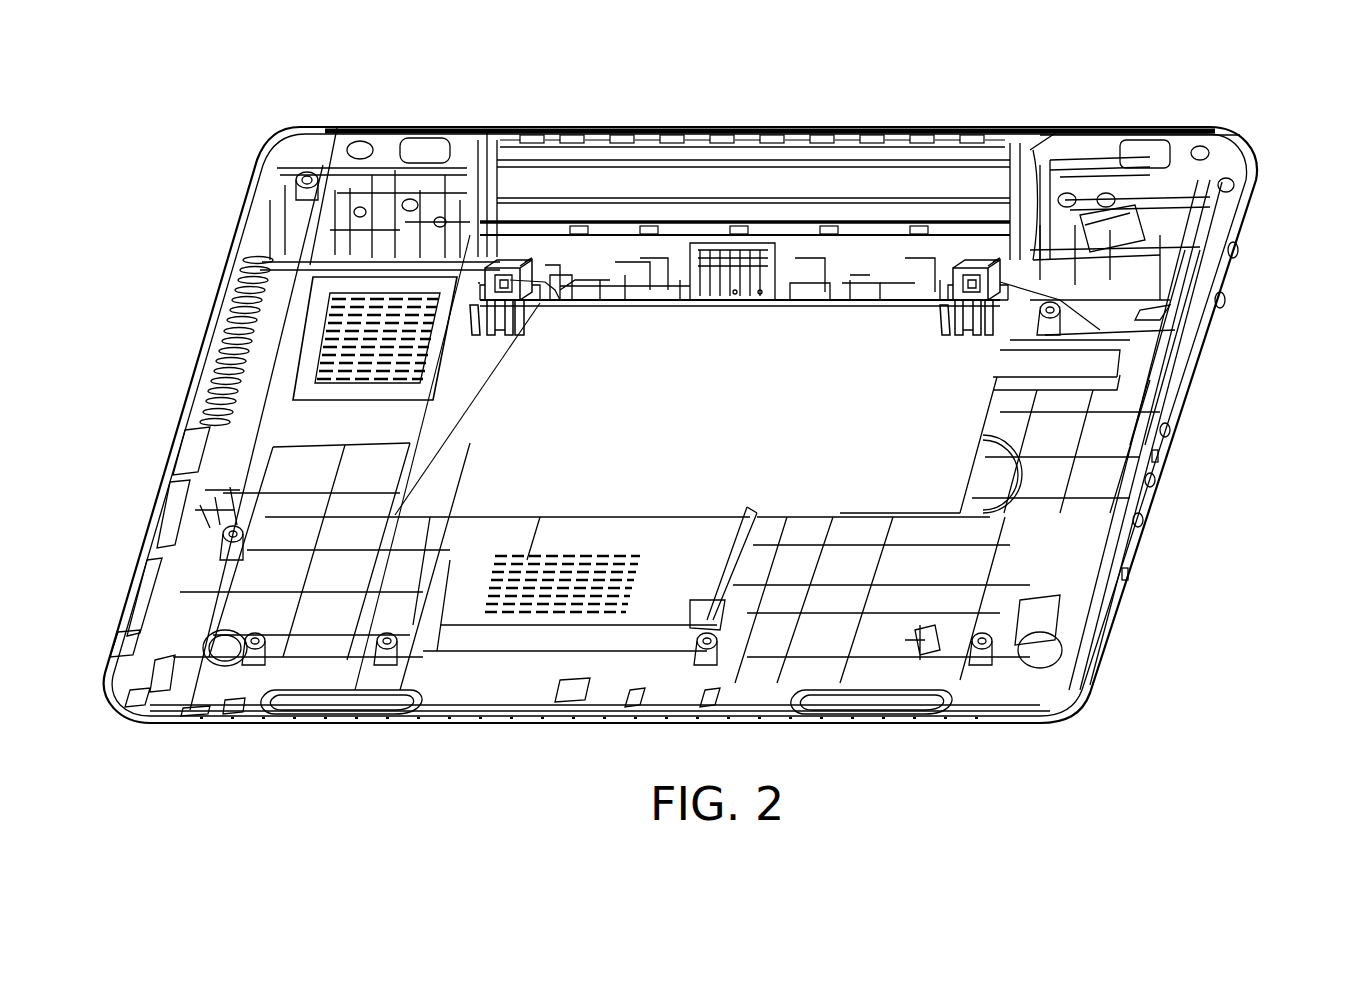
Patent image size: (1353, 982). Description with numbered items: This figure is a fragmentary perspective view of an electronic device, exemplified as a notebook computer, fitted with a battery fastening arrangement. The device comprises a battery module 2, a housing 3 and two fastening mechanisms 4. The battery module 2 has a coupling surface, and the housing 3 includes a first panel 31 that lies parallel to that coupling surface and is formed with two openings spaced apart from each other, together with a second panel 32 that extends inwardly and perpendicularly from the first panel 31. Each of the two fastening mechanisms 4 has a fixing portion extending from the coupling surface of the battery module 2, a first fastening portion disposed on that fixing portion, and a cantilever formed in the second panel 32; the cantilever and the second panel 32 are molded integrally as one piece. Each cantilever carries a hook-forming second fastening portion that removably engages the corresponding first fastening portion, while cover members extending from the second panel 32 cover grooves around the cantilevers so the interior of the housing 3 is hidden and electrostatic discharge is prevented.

The battery module 2 is at (750, 190).
The housing 3 is at (1178, 460).
The first panel 31 is at (1013, 263).
The second panel 32 is at (927, 472).
The fastening mechanisms 4 is at (478, 284).